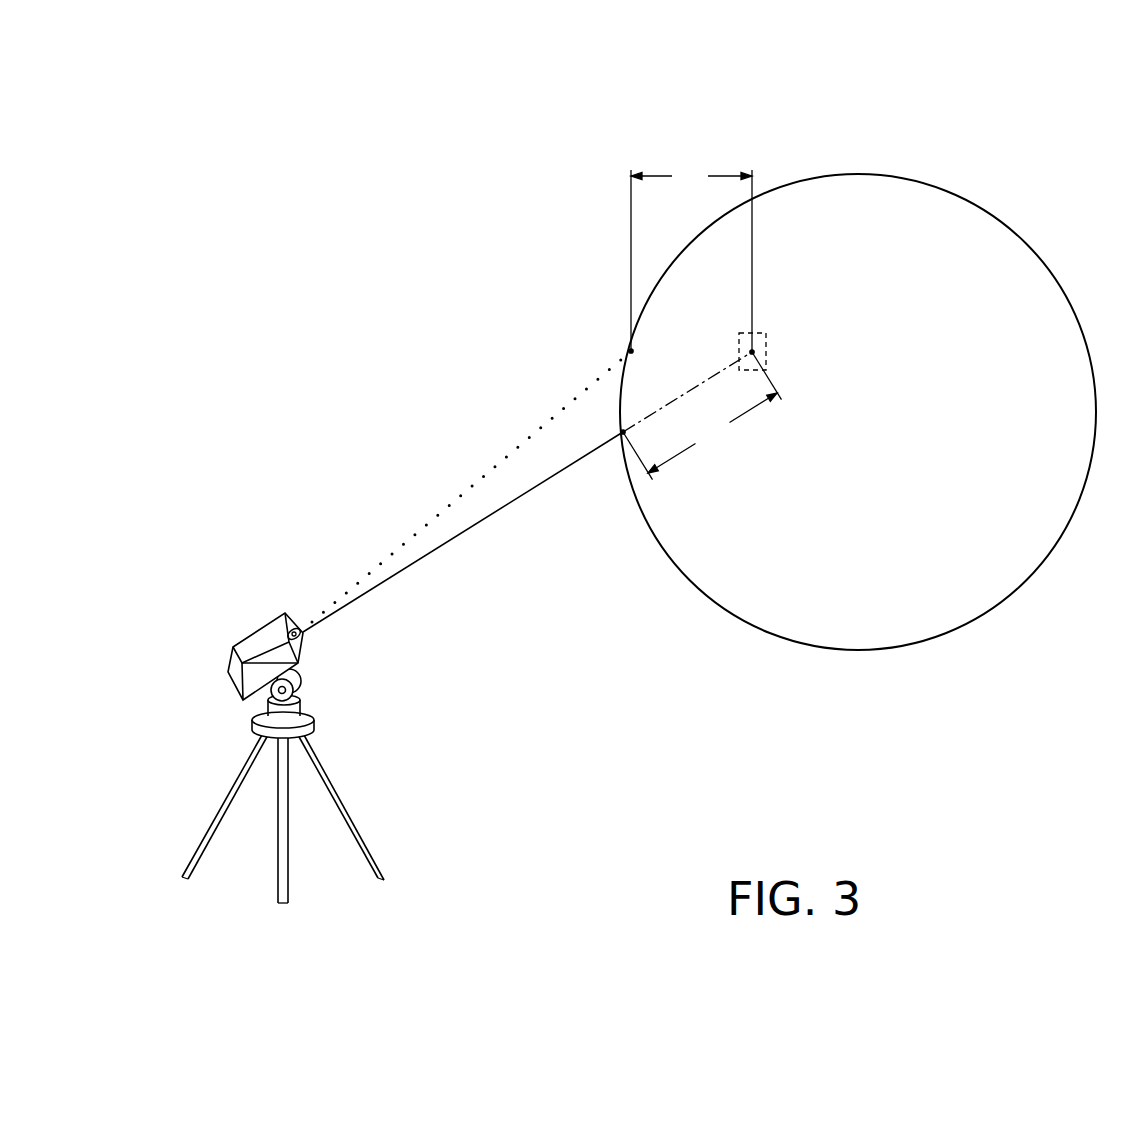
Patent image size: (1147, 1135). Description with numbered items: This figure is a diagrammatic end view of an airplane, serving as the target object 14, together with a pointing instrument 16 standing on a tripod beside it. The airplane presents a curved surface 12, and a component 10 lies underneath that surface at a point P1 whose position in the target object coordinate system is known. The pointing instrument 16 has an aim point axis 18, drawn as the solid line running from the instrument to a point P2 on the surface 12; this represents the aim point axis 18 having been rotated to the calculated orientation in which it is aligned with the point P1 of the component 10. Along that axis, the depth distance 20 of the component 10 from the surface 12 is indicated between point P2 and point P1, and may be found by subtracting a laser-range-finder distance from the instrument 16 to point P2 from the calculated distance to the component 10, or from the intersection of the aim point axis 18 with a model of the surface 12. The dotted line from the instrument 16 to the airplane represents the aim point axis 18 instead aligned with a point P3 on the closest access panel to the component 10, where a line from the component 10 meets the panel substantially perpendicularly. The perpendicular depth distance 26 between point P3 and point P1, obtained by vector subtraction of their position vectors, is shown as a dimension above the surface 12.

The component 10 is at (760, 332).
The surface 12 is at (860, 174).
The target object 14 is at (1063, 148).
The pointing instrument 16 is at (338, 758).
The aim point axis 18 is at (490, 513).
The depth distance 20 is at (702, 416).
The perpendicular depth distance 26 is at (691, 256).
The point P1 is at (768, 352).
The point P2 is at (623, 435).
The point P3 is at (628, 351).